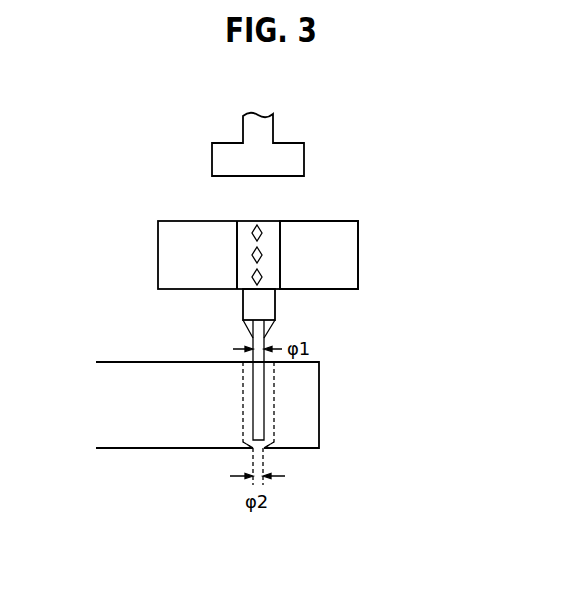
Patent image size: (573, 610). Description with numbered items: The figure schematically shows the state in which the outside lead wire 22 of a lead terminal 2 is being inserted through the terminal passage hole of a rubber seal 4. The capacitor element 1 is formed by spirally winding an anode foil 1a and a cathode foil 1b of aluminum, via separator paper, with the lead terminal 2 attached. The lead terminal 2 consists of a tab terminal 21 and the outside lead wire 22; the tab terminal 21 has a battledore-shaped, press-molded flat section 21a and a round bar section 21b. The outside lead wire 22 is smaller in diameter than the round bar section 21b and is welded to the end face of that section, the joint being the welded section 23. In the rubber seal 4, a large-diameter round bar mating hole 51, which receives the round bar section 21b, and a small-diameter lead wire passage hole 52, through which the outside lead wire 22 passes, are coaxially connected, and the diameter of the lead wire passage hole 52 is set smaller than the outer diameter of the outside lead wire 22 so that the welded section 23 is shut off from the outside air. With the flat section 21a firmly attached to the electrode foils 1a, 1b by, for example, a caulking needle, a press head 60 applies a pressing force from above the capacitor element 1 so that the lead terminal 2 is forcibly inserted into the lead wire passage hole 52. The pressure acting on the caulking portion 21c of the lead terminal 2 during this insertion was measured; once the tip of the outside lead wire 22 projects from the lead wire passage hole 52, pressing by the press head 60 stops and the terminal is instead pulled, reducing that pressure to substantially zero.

The press head 60 is at (304, 160).
The capacitor element 1 is at (150, 252).
The anode foil 1a is at (359, 233).
The cathode foil 1b is at (358, 254).
The lead terminal 2 is at (261, 364).
The tab terminal 21 is at (290, 231).
The flat section 21a is at (235, 235).
The round bar section 21b is at (275, 305).
The caulking portion 21c is at (263, 277).
The outside lead wire 22 is at (252, 340).
The welded section 23 is at (267, 330).
The rubber seal 4 is at (329, 398).
The round bar mating hole 51 is at (243, 418).
The lead wire passage hole 52 is at (258, 451).